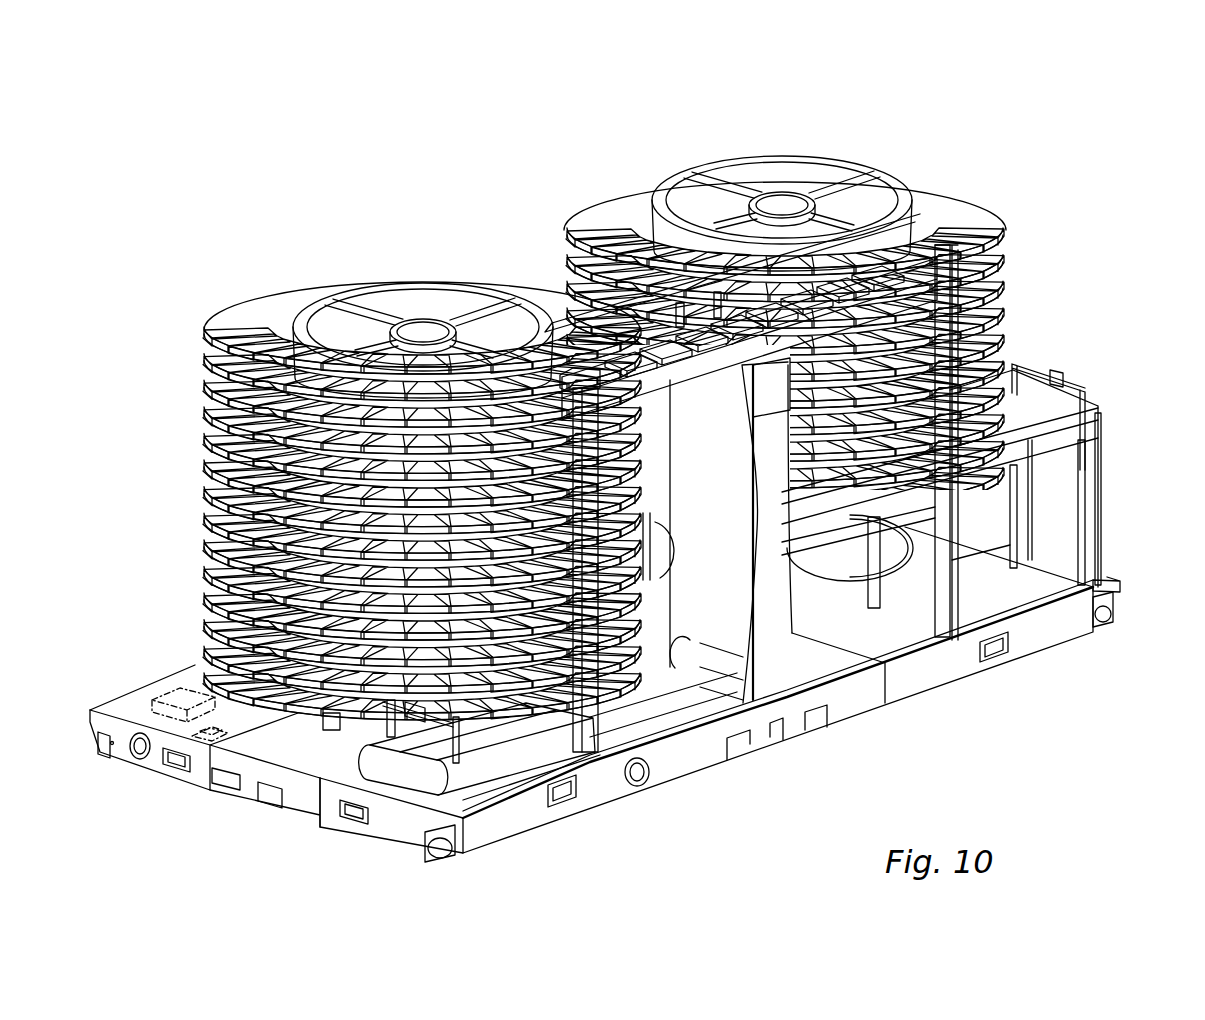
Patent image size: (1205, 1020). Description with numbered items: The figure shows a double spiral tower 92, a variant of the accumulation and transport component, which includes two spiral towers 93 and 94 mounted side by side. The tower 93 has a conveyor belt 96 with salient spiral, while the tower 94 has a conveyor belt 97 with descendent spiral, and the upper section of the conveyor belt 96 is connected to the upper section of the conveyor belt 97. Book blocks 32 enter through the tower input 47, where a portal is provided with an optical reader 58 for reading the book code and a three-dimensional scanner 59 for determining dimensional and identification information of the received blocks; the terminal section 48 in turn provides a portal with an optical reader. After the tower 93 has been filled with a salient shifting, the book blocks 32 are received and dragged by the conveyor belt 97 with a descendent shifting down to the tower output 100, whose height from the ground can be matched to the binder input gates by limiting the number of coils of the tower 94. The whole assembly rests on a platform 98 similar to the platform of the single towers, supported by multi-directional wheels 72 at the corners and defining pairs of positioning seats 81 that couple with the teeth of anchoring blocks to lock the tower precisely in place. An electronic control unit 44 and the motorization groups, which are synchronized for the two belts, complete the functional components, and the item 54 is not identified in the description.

The double spiral tower 92 is at (1047, 97).
The spiral tower 93 is at (224, 275).
The spiral tower 94 is at (518, 150).
The conveyor belt 96 is at (201, 478).
The conveyor belt 97 is at (1000, 272).
The platform 98 is at (1120, 580).
The tower output 100 is at (1110, 398).
The multi-directional wheels 72 is at (112, 745).
The electronic control unit 44 is at (168, 690).
The sensor 54 is at (232, 733).
The optical reader 58 is at (477, 749).
The three-dimensional scanner 59 is at (421, 741).
The tower input 47 is at (318, 800).
The positioning seats 81 is at (290, 800).
The book blocks 32 is at (548, 740).
The terminal section 48 is at (767, 530).